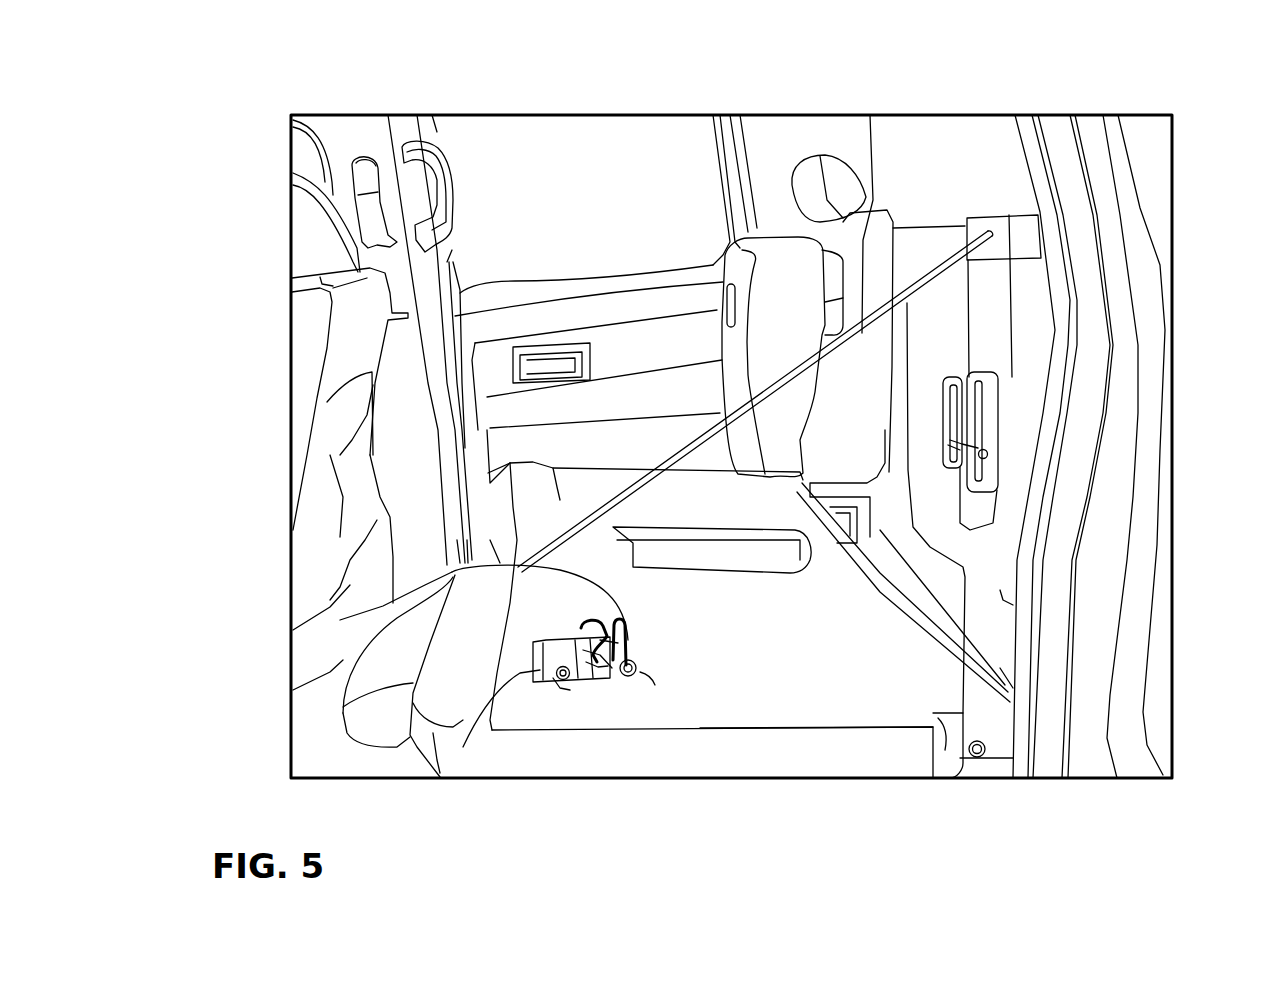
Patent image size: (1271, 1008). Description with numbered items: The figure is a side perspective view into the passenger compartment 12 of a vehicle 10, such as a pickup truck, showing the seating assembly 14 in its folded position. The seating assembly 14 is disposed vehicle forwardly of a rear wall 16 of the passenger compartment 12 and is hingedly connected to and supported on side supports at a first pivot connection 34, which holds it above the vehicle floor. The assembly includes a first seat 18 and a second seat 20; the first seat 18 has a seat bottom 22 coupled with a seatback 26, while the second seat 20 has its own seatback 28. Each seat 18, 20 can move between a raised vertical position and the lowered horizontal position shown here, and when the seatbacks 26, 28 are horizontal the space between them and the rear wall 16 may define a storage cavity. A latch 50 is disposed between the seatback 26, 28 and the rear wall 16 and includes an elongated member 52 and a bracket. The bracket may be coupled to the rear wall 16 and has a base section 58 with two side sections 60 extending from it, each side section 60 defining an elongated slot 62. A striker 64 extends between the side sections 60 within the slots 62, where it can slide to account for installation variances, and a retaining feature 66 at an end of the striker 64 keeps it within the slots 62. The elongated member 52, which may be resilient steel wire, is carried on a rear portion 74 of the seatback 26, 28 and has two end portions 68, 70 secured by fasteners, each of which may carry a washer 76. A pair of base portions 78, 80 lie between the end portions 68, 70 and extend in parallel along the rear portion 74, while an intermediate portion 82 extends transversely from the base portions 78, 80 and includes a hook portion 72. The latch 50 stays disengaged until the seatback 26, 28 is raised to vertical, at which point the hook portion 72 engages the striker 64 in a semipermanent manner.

The vehicle 10 is at (1007, 108).
The passenger compartment 12 is at (918, 163).
The seating assembly 14 is at (847, 760).
The rear wall 16 is at (927, 250).
The first seat 18 is at (777, 227).
The second seat 20 is at (867, 717).
The seat bottom 22 is at (787, 280).
The seatback 26 is at (868, 233).
The seatback 28 is at (500, 755).
The first pivot connection 34 is at (982, 760).
The latch 50 is at (1090, 507).
The elongated member 52 is at (575, 683).
The base section 58 is at (553, 680).
The side sections 60 is at (993, 390).
The elongated slot 62 is at (983, 422).
The striker 64 is at (960, 470).
The retaining feature 66 is at (980, 453).
The end portion 68 is at (533, 665).
The end portion 70 is at (637, 672).
The hook portion 72 is at (612, 607).
The rear portion 74 is at (757, 670).
The washer 76 is at (553, 700).
The base portion 78 is at (593, 650).
The base portion 80 is at (597, 688).
The intermediate portion 82 is at (634, 604).